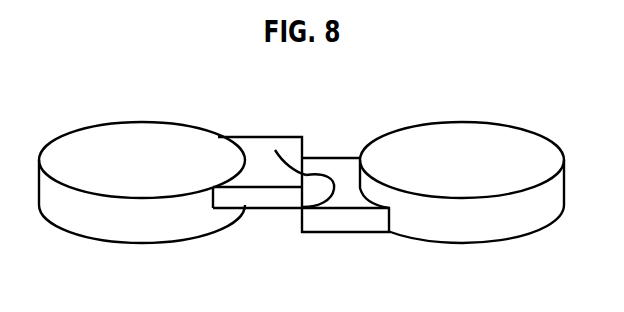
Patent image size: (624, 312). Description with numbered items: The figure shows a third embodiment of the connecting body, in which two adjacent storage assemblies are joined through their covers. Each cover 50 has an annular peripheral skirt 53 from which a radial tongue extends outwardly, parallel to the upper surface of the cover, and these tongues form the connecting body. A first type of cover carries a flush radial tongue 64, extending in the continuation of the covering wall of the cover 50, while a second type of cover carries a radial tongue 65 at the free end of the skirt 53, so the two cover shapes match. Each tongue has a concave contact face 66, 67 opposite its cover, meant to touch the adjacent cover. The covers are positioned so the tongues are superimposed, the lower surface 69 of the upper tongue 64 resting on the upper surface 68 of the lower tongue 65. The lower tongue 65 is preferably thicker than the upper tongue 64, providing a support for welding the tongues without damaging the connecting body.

The cover 50 is at (301, 174).
The annular peripheral skirt 53 is at (142, 224).
The flush radial tongue 64 is at (262, 207).
The radial tongue 65 is at (353, 184).
The concave contact face 66 is at (315, 138).
The concave contact face 67 is at (299, 171).
The upper surface of the lower tongue 68 is at (340, 158).
The lower surface of the upper tongue 69 is at (258, 211).